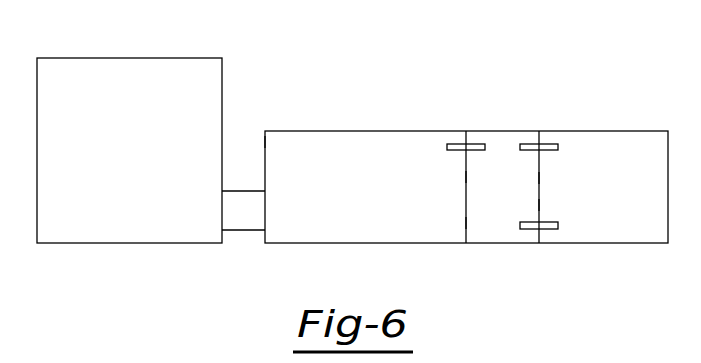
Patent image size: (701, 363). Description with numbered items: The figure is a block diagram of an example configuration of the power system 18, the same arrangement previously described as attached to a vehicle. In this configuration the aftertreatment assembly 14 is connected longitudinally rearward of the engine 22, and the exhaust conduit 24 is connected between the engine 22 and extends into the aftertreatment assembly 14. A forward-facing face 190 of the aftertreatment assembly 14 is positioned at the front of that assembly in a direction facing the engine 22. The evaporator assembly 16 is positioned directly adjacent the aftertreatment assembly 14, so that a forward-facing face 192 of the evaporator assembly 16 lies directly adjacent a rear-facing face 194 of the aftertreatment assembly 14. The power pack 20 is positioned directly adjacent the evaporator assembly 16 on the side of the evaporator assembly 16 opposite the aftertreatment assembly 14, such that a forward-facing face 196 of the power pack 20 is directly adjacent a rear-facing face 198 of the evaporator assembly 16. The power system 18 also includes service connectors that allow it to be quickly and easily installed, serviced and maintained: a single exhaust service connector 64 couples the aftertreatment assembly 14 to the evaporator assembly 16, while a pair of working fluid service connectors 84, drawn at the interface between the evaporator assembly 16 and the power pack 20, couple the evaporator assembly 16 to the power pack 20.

The aftertreatment assembly 14 is at (375, 197).
The evaporator assembly 16 is at (510, 197).
The power system 18 is at (347, 78).
The power pack 20 is at (617, 197).
The engine 22 is at (72, 100).
The exhaust conduit 24 is at (234, 221).
The exhaust service connector 64 is at (455, 146).
The second valve 84 is at (547, 145).
The forward-facing face of the aftertreatment assembly 190 is at (265, 142).
The forward-facing face of the evaporator assembly 192 is at (465, 223).
The rear-facing face of the aftertreatment assembly 194 is at (467, 177).
The forward-facing face of the power pack 196 is at (538, 205).
The rear-facing face of the evaporator assembly 198 is at (540, 178).